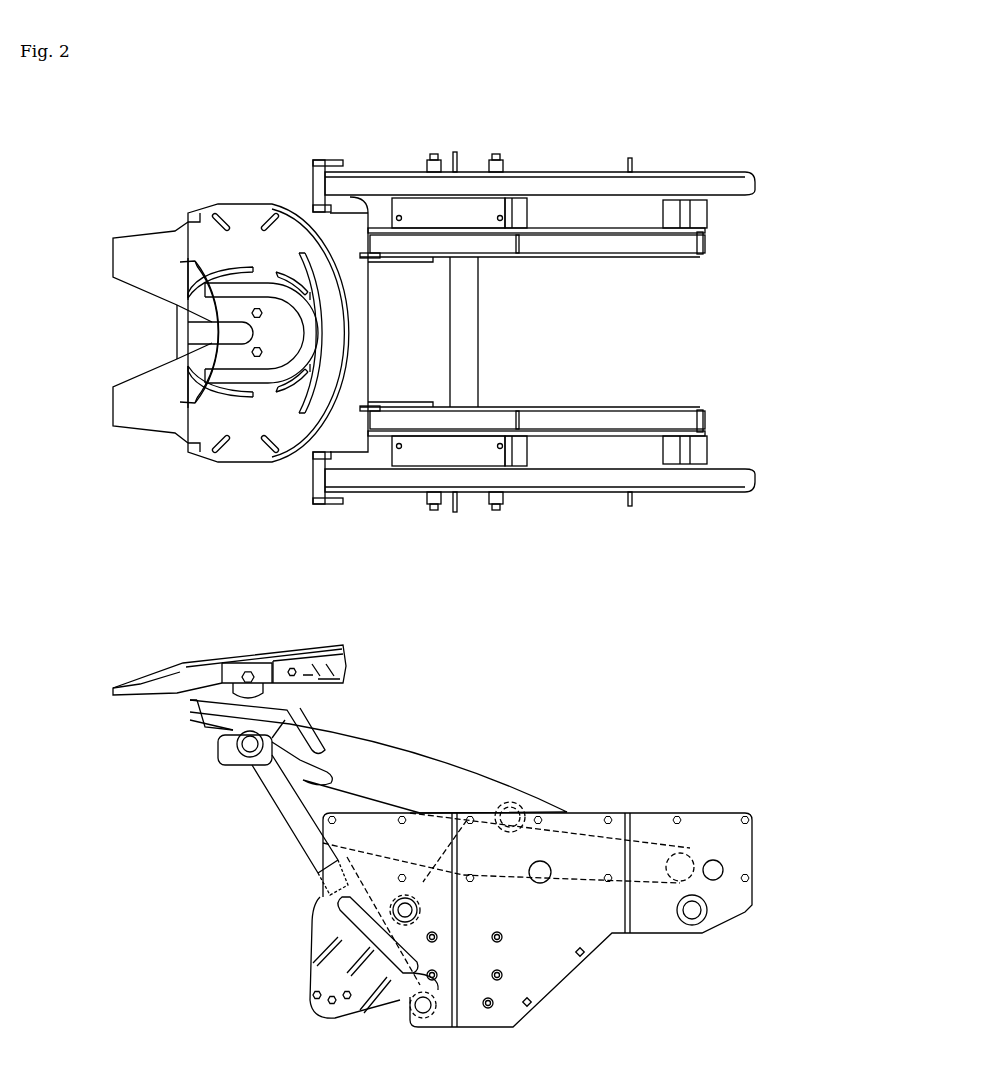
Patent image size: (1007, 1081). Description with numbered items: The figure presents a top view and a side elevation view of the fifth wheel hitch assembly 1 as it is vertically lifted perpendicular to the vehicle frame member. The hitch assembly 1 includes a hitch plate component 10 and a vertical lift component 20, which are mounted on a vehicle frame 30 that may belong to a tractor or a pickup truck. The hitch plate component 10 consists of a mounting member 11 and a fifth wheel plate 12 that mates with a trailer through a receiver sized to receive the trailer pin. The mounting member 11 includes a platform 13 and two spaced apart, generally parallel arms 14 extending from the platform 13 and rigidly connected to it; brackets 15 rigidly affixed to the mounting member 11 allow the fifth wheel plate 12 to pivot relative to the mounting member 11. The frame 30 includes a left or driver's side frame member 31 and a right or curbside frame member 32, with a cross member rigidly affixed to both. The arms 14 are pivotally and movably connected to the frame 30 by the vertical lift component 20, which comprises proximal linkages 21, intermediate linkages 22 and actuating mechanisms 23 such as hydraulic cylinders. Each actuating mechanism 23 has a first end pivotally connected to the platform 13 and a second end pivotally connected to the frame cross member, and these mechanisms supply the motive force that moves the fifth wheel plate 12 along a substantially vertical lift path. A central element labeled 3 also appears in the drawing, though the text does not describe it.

The fifth wheel hitch assembly 1 is at (479, 100).
The central column 3 is at (452, 318).
The hitch plate component 10 is at (247, 222).
The mounting member 11 is at (350, 243).
The fifth wheel plate 12 is at (223, 413).
The platform 13 is at (337, 423).
The arms 14 is at (747, 473).
The brackets 15 is at (190, 713).
The vertical lift component 20 is at (680, 892).
The proximal linkages 21 is at (708, 450).
The intermediate linkages 22 is at (478, 443).
The actuating mechanisms 23 is at (277, 806).
The frame 30 is at (755, 493).
The left frame member 31 is at (583, 175).
The right frame member 32 is at (595, 492).